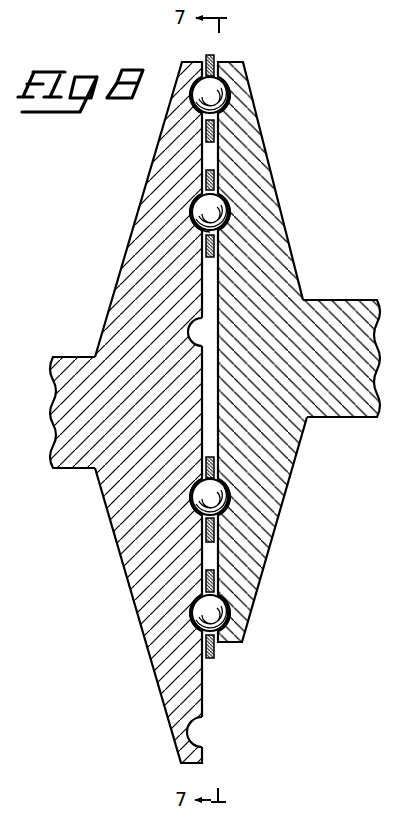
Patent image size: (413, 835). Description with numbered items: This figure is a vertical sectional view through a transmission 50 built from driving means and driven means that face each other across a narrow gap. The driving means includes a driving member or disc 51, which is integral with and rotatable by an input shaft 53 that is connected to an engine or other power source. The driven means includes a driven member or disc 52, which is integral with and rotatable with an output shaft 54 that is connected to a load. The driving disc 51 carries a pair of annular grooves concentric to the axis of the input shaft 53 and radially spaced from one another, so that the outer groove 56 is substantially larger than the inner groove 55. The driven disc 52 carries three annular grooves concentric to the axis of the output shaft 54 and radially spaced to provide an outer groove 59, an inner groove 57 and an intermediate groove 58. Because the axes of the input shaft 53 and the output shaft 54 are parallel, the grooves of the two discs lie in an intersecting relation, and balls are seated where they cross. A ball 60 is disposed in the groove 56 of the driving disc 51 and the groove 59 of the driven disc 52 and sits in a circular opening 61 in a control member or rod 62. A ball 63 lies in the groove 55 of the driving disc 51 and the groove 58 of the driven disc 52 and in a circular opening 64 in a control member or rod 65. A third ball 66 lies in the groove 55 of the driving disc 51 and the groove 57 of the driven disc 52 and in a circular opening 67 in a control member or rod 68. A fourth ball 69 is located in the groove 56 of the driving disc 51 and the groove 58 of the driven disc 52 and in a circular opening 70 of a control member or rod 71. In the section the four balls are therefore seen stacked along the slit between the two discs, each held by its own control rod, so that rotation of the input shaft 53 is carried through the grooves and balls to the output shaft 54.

The transmission 50 is at (268, 76).
The driving disc 51 is at (245, 60).
The driven disc 52 is at (188, 60).
The input shaft 53 is at (341, 300).
The output shaft 54 is at (72, 357).
The inner groove 55 is at (226, 205).
The outer groove 56 is at (228, 96).
The inner groove 57 is at (192, 325).
The intermediate groove 58 is at (200, 222).
The outer groove 59 is at (199, 729).
The ball 60 is at (204, 92).
The circular opening 61 is at (226, 105).
The control rod 62 is at (215, 129).
The ball 63 is at (199, 208).
The circular opening 64 is at (222, 226).
The control rod 65 is at (215, 178).
The third ball 66 is at (197, 515).
The circular opening 67 is at (222, 487).
The control rod 68 is at (215, 530).
The fourth ball 69 is at (198, 617).
The circular opening 70 is at (225, 620).
The control rod 71 is at (216, 655).